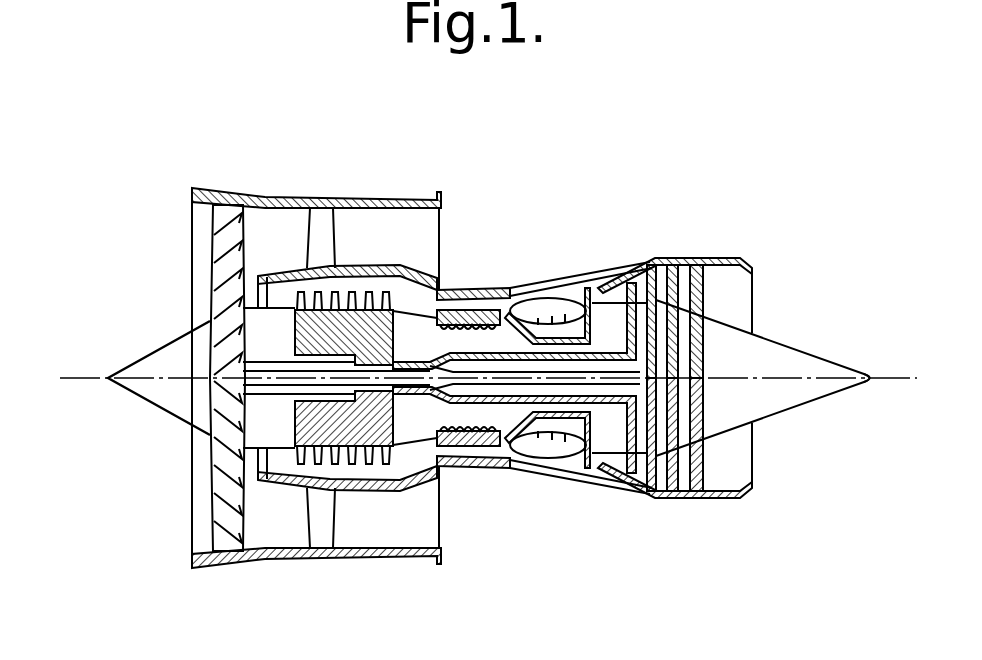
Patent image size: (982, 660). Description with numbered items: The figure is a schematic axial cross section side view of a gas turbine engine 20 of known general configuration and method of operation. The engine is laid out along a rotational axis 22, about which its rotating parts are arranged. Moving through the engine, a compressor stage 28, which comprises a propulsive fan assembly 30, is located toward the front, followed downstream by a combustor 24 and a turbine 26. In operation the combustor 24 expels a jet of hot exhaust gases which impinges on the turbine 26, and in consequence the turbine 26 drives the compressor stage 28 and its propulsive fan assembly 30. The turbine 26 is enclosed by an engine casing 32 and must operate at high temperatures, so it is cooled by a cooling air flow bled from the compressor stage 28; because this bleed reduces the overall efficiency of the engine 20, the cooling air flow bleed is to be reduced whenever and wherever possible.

The gas turbine engine 20 is at (582, 190).
The rotational axis 22 is at (78, 378).
The combustor 24 is at (548, 290).
The turbine 26 is at (680, 245).
The compressor stage 28 is at (246, 188).
The propulsive fan assembly 30 is at (158, 327).
The engine casing 32 is at (447, 292).